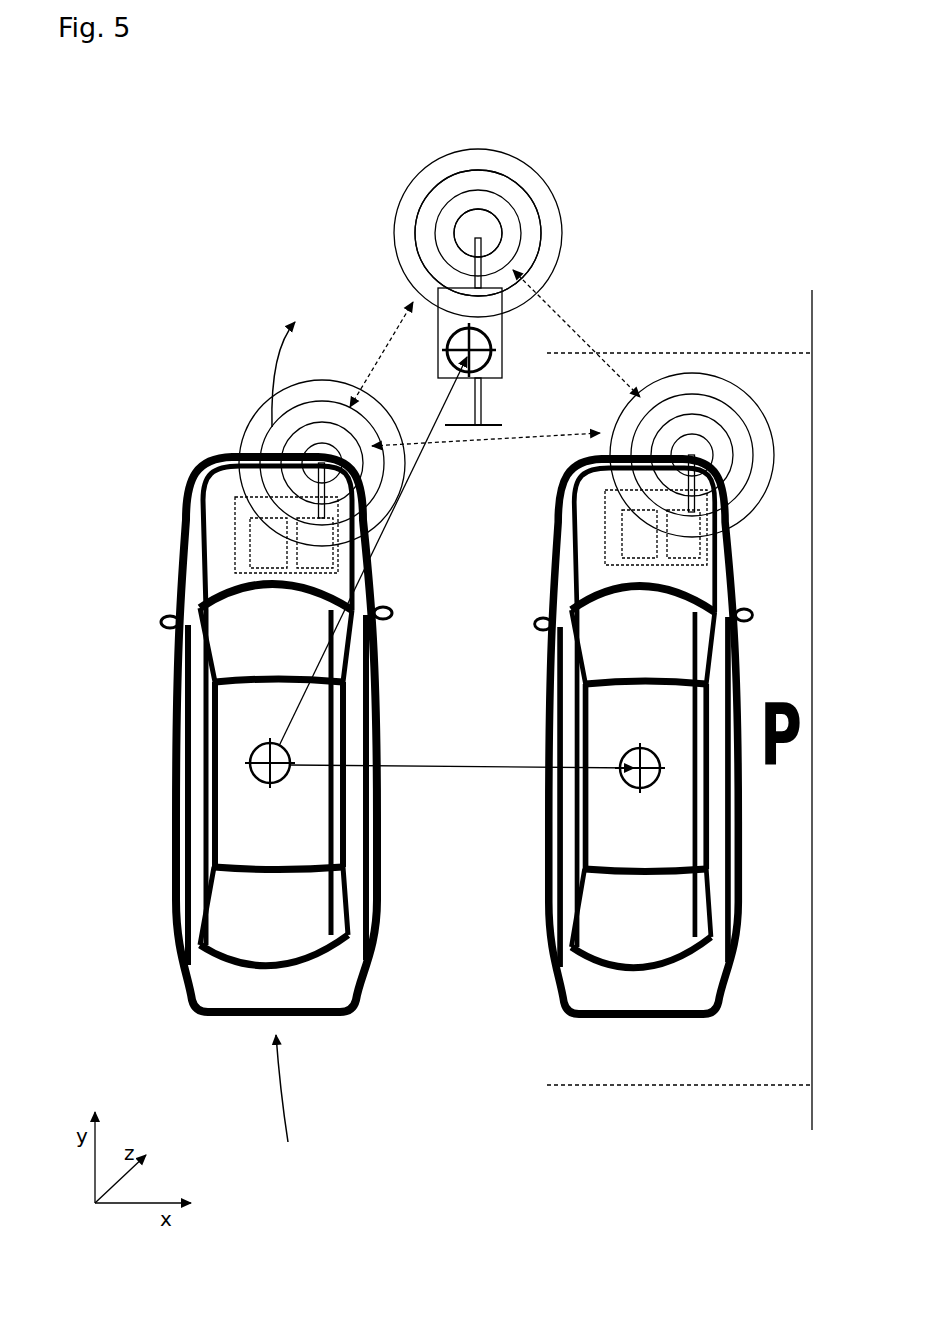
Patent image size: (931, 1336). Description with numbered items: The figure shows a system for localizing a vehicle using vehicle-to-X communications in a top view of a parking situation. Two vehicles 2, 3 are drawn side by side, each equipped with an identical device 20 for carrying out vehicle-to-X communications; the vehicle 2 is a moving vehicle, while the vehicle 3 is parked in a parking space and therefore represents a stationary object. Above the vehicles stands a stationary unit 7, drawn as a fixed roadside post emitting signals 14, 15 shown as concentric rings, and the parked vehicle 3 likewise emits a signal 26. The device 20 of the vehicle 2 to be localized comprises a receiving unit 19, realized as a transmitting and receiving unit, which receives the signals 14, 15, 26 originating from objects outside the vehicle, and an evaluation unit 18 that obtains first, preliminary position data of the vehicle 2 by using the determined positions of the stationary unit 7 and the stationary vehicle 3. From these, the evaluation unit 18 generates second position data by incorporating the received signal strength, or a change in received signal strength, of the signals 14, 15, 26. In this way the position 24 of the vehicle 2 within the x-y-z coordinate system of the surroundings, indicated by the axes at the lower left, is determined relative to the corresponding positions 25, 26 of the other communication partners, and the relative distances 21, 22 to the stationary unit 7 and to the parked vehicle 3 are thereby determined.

The vehicle 2 is at (275, 696).
The vehicle 3 is at (644, 693).
The stationary unit 7 is at (433, 343).
The signal 14 is at (478, 233).
The signal 15 is at (478, 233).
The evaluation unit 18 is at (248, 558).
The receiving unit 19 is at (335, 557).
The device for carrying out vehicle-to-X communications 20 is at (235, 535).
The relative distance 21 is at (373, 551).
The relative distance 22 is at (462, 753).
The position of the vehicle 24 is at (557, 406).
The position 25 is at (270, 773).
The signal 26 is at (692, 455).